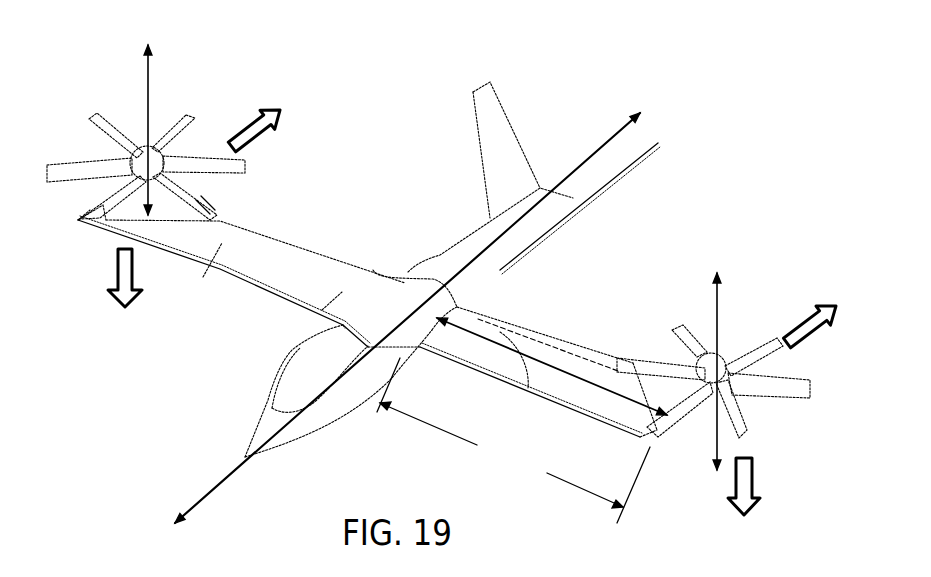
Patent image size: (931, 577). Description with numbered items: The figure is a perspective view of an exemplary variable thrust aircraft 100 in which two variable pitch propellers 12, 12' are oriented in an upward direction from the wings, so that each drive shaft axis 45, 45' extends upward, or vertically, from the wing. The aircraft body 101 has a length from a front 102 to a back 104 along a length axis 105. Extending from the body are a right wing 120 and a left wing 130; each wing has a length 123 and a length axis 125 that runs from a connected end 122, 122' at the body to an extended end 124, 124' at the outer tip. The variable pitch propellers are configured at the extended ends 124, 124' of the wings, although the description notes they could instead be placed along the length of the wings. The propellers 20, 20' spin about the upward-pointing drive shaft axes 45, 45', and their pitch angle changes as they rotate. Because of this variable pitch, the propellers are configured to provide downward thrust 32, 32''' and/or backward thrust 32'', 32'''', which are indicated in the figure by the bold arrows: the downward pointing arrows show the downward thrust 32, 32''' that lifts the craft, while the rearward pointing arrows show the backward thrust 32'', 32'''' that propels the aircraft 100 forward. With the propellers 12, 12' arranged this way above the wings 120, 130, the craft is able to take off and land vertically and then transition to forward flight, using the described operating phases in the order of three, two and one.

The variable thrust aircraft 100 is at (392, 140).
The aircraft body 101 is at (430, 262).
The front 102 is at (246, 457).
The back 104 is at (541, 188).
The length axis 105 is at (193, 492).
The right wing 120 is at (278, 255).
The connected end 122 is at (356, 268).
The connected end 122' is at (538, 356).
The length 123 is at (513, 440).
The extended end 124 is at (60, 252).
The extended end 124' is at (668, 474).
The length axis 125 is at (570, 351).
The left wing 130 is at (520, 348).
The variable pitch propeller 12 is at (154, 159).
The variable pitch propeller 12' is at (720, 361).
The propeller 20 is at (141, 130).
The propeller 20' is at (720, 400).
The drive shaft axis 45 is at (116, 130).
The drive shaft axis 45' is at (683, 371).
The downward thrust 32 is at (162, 283).
The backward thrust 32'' is at (282, 131).
The downward thrust 32''' is at (777, 486).
The backward thrust 32'''' is at (798, 301).